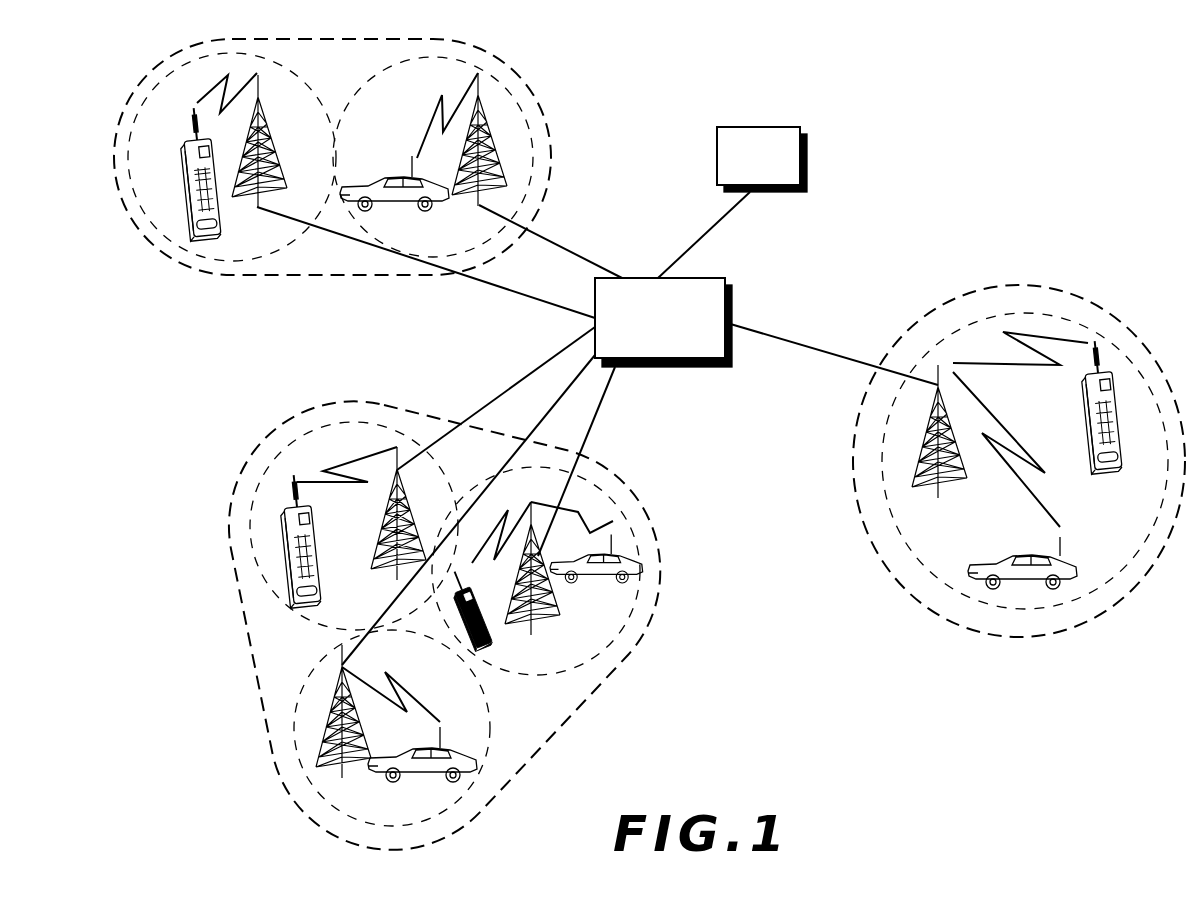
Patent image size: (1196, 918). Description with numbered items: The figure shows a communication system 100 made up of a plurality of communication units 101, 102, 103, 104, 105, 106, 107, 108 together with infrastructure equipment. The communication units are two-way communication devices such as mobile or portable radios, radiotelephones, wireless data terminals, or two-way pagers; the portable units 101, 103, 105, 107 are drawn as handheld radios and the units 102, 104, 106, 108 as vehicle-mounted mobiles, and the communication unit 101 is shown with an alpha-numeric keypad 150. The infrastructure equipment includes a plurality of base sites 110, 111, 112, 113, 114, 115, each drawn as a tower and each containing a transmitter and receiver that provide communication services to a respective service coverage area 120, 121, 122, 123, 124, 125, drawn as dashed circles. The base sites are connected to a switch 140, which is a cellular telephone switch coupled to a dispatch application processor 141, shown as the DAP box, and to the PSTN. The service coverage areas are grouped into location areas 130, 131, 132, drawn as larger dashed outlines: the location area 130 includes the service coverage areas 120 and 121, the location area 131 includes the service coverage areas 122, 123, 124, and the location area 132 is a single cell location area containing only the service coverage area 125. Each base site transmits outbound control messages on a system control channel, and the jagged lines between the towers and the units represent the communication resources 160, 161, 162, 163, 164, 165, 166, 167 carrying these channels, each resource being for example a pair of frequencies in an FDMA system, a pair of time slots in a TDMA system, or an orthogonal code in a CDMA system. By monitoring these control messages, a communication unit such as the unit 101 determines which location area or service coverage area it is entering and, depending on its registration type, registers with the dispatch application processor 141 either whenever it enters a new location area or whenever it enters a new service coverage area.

The communication system 100 is at (1000, 153).
The communication unit 101 is at (183, 200).
The communication unit 102 is at (368, 183).
The communication unit 103 is at (280, 562).
The communication unit 104 is at (448, 750).
The communication unit 105 is at (478, 605).
The communication unit 106 is at (587, 578).
The communication unit 107 is at (1090, 472).
The communication unit 108 is at (1023, 555).
The base site 110 is at (277, 140).
The base site 111 is at (487, 122).
The base site 112 is at (387, 512).
The base site 113 is at (358, 715).
The base site 114 is at (543, 623).
The base site 115 is at (965, 472).
The service coverage area 120 is at (293, 240).
The service coverage area 121 is at (393, 64).
The service coverage area 122 is at (250, 505).
The service coverage area 123 is at (488, 685).
The service coverage area 124 is at (547, 675).
The service coverage area 125 is at (880, 467).
The location area 130 is at (237, 278).
The location area 131 is at (538, 745).
The location area 132 is at (1013, 283).
The switch 140 is at (733, 288).
The dispatch application processor 141 is at (807, 152).
The alpha-numeric keypad 150 is at (188, 190).
The communication resource 160 is at (225, 74).
The communication resource 161 is at (437, 102).
The communication resource 162 is at (313, 482).
The communication resource 163 is at (420, 698).
The communication resource 164 is at (501, 524).
The communication resource 165 is at (607, 520).
The communication resource 166 is at (1047, 508).
The RF communication link 167 is at (1052, 370).